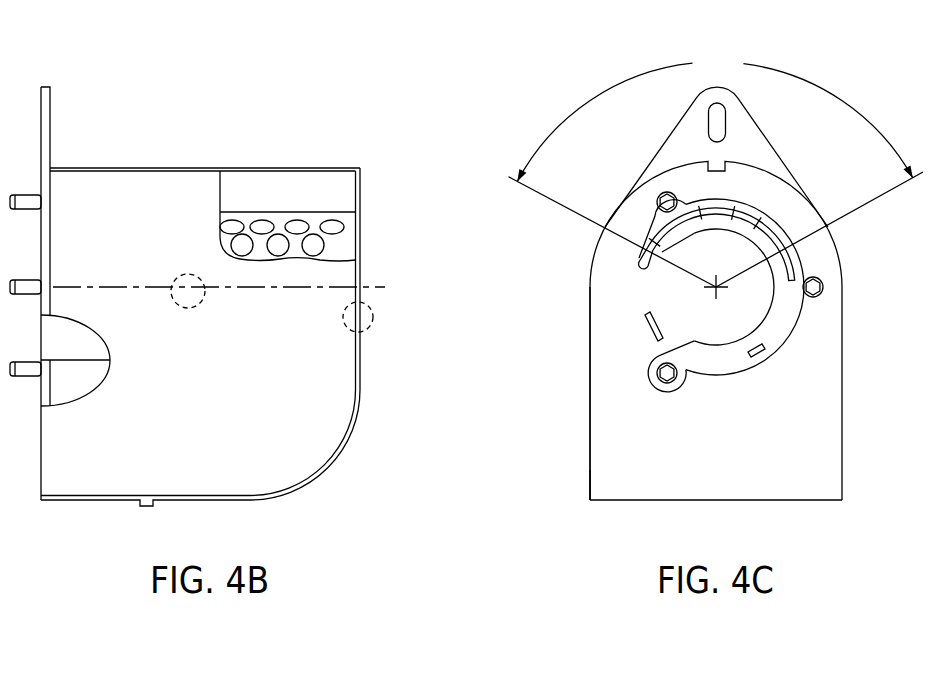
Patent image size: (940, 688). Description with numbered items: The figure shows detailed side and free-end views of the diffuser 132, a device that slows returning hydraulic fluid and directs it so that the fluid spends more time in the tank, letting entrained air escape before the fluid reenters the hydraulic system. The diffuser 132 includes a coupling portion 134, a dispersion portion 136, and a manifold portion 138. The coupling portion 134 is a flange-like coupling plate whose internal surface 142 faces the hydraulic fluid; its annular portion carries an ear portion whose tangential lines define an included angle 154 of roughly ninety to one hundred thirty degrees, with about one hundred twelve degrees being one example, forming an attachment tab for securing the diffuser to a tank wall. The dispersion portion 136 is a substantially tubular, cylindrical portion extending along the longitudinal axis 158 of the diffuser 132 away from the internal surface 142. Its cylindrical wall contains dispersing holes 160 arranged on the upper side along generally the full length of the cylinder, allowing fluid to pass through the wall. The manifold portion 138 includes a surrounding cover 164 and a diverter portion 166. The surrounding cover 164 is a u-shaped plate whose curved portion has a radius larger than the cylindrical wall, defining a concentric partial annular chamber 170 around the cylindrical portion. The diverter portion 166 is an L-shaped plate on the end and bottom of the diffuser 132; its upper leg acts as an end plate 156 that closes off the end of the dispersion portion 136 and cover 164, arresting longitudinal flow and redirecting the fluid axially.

In FIG. 4B, the diffuser 132 is at (336, 86).
In FIG. 4C, the diffuser 132 is at (850, 84).
In FIG. 4C, the coupling portion 134 is at (770, 142).
In FIG. 4B, the dispersion portion 136 is at (340, 212).
In FIG. 4C, the dispersion portion 136 is at (767, 228).
In FIG. 4B, the manifold portion 138 is at (300, 437).
In FIG. 4C, the manifold portion 138 is at (638, 493).
In FIG. 4C, the internal surface 142 is at (737, 382).
In FIG. 4C, the included angle 154 is at (716, 168).
In FIG. 4B, the end plate 156 is at (373, 316).
In FIG. 4B, the longitudinal axis 158 is at (197, 306).
In FIG. 4C, the longitudinal axis 158 is at (717, 293).
In FIG. 4B, the holes 160 is at (316, 246).
In FIG. 4B, the surrounding cover 164 is at (255, 475).
In FIG. 4C, the surrounding cover 164 is at (590, 408).
In FIG. 4B, the diverter portion 166 is at (362, 382).
In FIG. 4C, the diverter portion 166 is at (707, 480).
In FIG. 4B, the partial annular chamber 170 is at (288, 185).